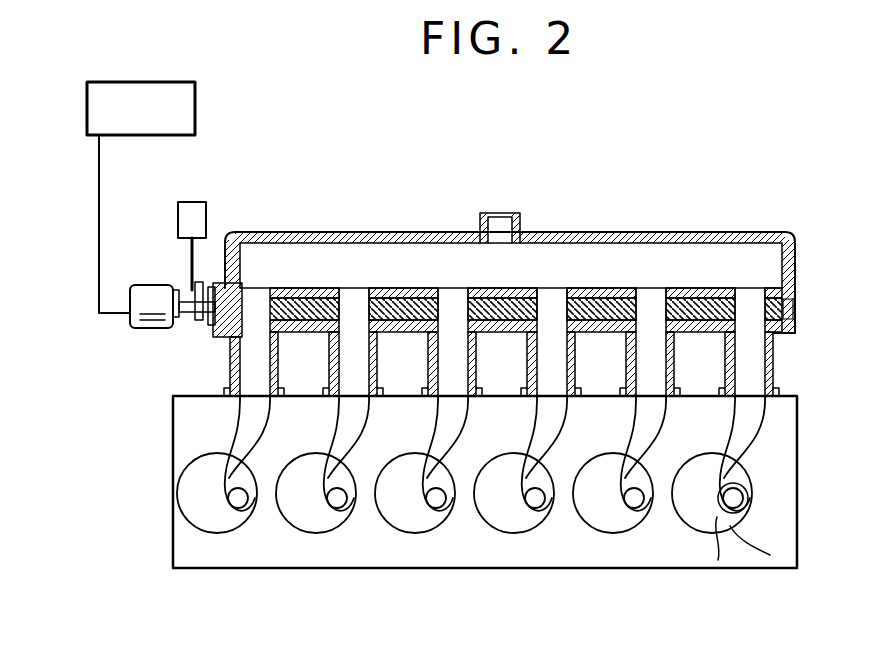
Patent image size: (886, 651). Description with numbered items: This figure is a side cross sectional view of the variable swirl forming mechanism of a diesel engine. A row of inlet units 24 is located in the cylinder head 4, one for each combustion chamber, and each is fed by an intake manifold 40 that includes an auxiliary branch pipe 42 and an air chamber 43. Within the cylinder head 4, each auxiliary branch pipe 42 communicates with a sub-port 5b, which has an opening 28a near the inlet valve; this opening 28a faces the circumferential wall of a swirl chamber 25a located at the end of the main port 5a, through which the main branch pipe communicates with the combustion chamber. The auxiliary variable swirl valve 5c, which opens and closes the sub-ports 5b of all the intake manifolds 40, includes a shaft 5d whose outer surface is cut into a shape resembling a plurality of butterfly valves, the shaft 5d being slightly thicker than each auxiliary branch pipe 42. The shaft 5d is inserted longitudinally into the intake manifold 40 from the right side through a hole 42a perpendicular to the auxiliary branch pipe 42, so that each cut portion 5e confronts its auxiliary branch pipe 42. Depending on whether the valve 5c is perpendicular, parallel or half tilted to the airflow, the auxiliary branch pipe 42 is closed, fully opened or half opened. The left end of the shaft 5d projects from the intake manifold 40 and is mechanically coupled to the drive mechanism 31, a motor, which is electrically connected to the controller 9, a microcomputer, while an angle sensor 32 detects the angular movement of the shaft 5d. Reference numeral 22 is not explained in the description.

The controller 9 is at (170, 93).
The angle sensor 32 is at (192, 257).
The drive mechanism 31 is at (155, 310).
The intake manifold 40 is at (662, 230).
The air chamber 43 is at (447, 255).
The auxiliary branch pipe 42 is at (447, 343).
The hole 42a is at (602, 298).
The shaft 5d is at (268, 314).
The cut portion 5e is at (352, 305).
The auxiliary variable swirl valve 5c is at (292, 276).
The inlet unit 24 is at (790, 370).
The cylinder head 4 is at (783, 515).
The sub-port 5b is at (242, 417).
The main port 5a is at (259, 482).
The opening 28a is at (748, 492).
The fuel injector 22 is at (717, 517).
The swirl chamber 25a is at (730, 526).